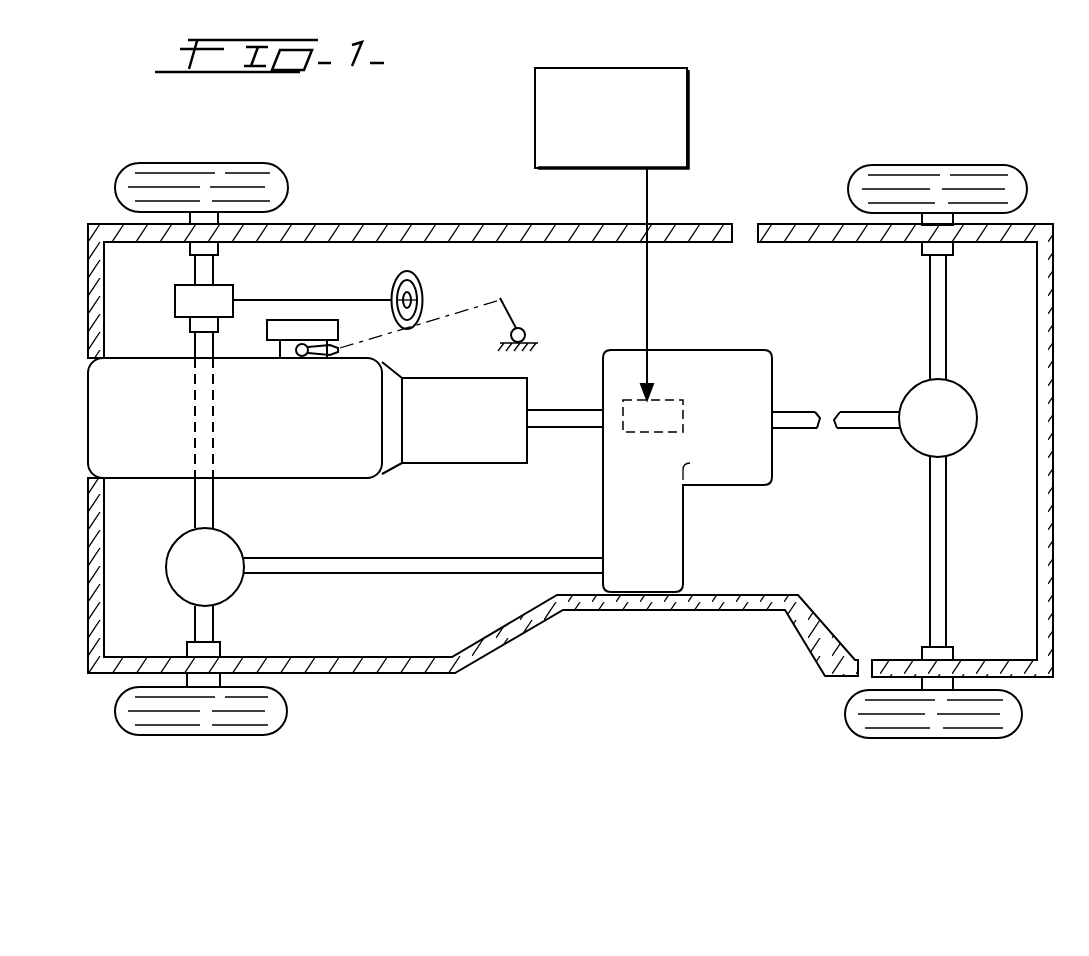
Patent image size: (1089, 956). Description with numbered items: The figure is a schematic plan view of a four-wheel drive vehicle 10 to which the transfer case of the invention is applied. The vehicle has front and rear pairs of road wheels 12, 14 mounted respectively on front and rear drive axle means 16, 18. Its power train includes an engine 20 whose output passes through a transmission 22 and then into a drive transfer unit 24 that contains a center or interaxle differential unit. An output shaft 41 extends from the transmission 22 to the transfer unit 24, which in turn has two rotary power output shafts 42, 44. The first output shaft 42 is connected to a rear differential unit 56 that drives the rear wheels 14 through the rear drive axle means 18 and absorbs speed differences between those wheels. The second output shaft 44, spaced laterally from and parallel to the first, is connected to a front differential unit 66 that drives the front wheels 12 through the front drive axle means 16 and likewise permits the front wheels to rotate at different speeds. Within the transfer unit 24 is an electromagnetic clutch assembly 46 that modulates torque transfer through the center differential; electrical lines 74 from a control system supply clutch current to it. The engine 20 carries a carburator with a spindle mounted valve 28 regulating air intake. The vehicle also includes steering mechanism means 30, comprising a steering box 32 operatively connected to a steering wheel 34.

The 4-wheel drive vehicle 10 is at (868, 136).
The front road wheels 12 is at (212, 164).
The rear road wheels 14 is at (1010, 185).
The front drive axle means 16 is at (203, 513).
The rear drive axle means 18 is at (930, 515).
The engine 20 is at (147, 427).
The transmission 22 is at (470, 432).
The drive transfer unit 24 is at (647, 519).
The spindle mounted valve 28 is at (291, 358).
The steering mechanism means 30 is at (175, 300).
The steering box 32 is at (186, 290).
The steering wheel 34 is at (424, 290).
The output shaft 41 is at (546, 410).
The power output shaft 42 is at (842, 413).
The second power output shaft 44 is at (438, 556).
The electromagnetic clutch assembly 46 is at (683, 414).
The rear differential unit 56 is at (950, 430).
The front differential unit 66 is at (217, 579).
The electrical conduits or lines 74 is at (648, 306).